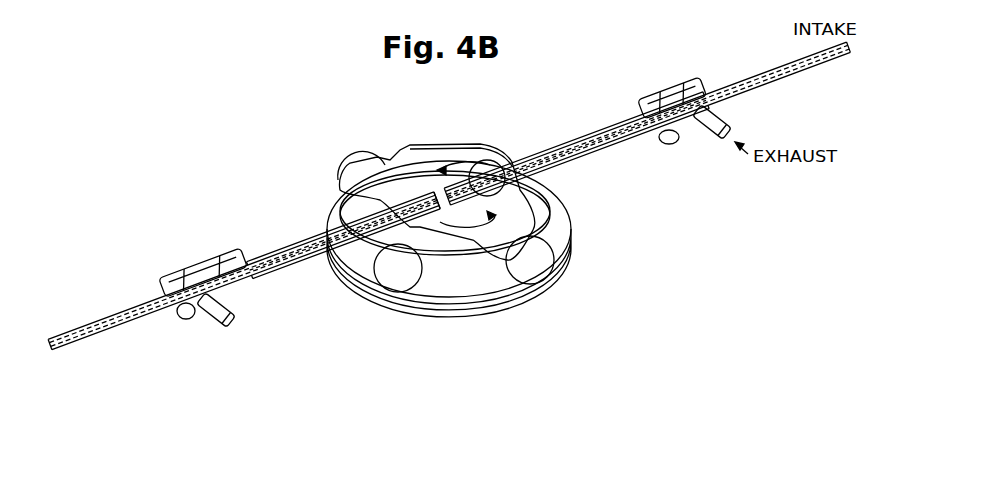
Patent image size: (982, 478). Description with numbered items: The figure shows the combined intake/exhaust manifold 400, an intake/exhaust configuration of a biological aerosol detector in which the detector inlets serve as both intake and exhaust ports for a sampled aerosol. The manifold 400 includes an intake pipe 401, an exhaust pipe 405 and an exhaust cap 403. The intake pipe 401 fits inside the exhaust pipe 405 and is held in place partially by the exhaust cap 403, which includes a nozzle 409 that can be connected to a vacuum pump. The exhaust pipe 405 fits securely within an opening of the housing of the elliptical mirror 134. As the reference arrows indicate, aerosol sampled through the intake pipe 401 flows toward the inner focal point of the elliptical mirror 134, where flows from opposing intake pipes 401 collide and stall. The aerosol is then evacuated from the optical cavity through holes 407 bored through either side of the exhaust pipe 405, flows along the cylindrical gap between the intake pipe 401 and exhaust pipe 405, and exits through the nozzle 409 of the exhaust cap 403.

The combined intake/exhaust manifold 400 is at (263, 133).
The intake pipe 401 is at (107, 333).
The exhaust cap 403 is at (212, 262).
The exhaust pipe 405 is at (311, 233).
The holes 407 is at (368, 200).
The nozzle 409 is at (211, 323).
The elliptical mirror 134 is at (562, 243).